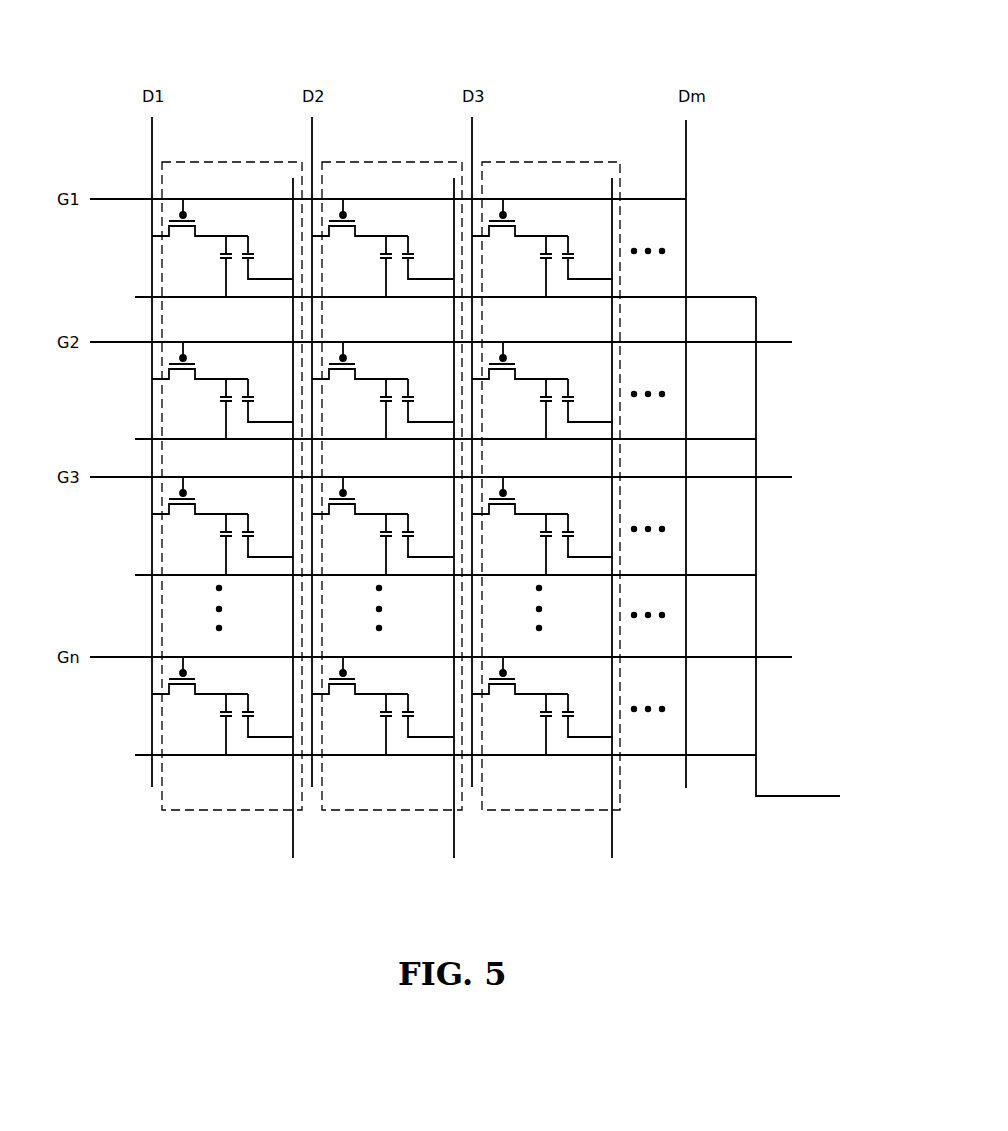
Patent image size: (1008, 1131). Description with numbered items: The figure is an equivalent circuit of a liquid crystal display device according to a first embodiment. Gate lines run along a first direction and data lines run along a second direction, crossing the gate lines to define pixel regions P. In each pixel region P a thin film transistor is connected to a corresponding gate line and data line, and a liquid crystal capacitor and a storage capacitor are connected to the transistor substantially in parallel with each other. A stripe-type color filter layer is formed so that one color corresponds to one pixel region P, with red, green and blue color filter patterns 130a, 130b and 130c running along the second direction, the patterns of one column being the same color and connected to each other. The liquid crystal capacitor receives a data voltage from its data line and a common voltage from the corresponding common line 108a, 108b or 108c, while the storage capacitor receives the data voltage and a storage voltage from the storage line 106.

The red color filter pattern 130a is at (173, 406).
The green color filter pattern 130b is at (398, 161).
The blue color filter pattern 130c is at (572, 161).
The common line 108a is at (292, 534).
The common line 108b is at (452, 534).
The common line 108c is at (611, 534).
The storage line 106 is at (840, 796).
The pixel region P is at (163, 274).